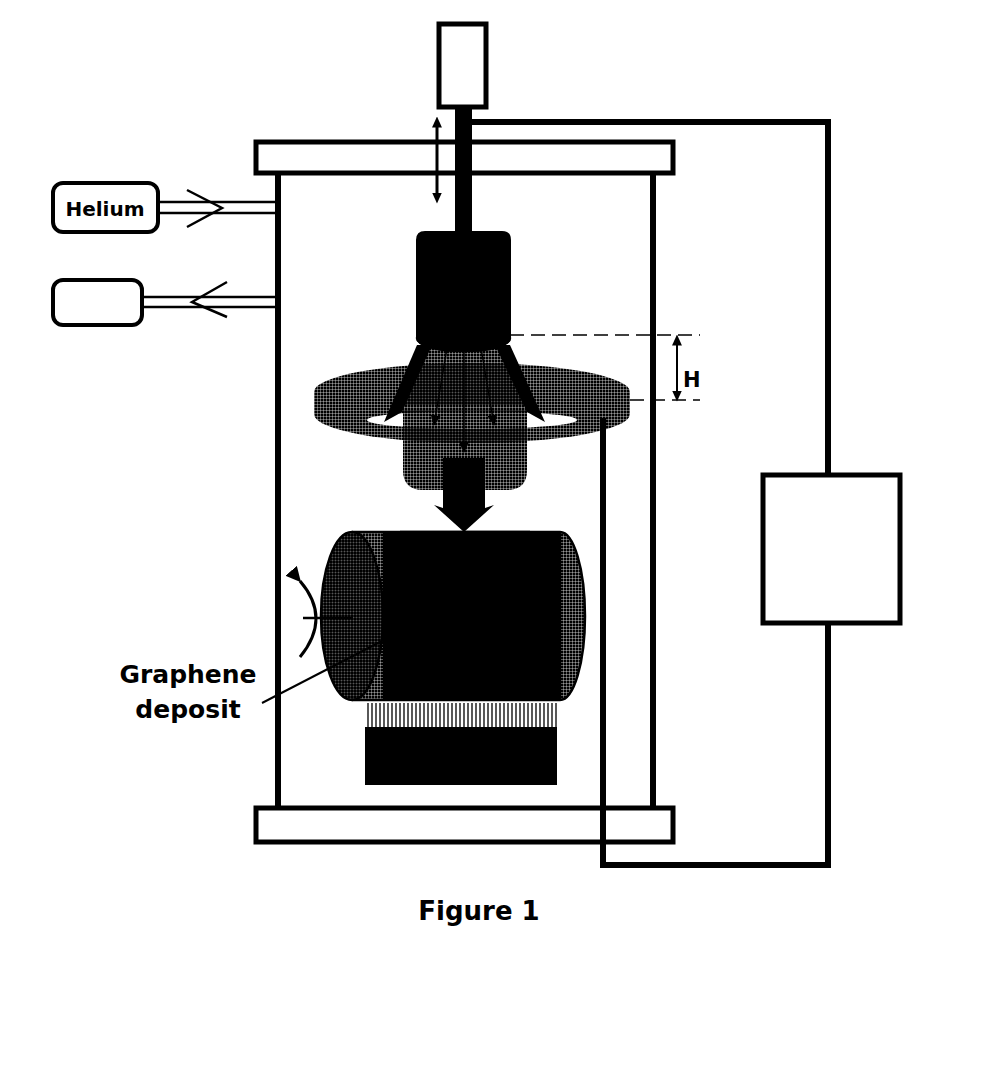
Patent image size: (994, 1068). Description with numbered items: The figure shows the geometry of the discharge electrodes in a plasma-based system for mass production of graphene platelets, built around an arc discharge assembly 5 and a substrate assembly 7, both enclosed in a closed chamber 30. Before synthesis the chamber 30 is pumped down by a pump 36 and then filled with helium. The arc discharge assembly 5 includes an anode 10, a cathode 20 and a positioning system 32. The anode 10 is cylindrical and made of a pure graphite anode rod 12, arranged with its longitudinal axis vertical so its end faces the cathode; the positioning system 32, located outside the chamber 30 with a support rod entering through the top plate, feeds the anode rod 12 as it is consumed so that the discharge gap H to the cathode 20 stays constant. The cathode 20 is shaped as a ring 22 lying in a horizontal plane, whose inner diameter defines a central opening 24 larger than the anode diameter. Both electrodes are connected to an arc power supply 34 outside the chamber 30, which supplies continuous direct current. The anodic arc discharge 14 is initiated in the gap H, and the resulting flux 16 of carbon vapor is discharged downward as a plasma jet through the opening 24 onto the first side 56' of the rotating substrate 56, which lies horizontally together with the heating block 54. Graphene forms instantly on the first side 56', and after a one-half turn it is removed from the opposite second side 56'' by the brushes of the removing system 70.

The closed chamber 30 is at (243, 137).
The positioning system 32 is at (488, 85).
The pump 36 is at (110, 327).
The anode 10 is at (514, 291).
The anode rod 12 is at (510, 295).
The anodic arc discharge 14 is at (396, 374).
The ring 22 is at (460, 401).
The cathode 20 is at (365, 420).
The central opening 24 is at (385, 425).
The flux 16 is at (403, 474).
The arc discharge assembly 5 is at (294, 409).
The substrate assembly 7 is at (294, 526).
The heating block 54 is at (434, 593).
The substrate 56 is at (558, 616).
The first side of the substrate 56' is at (490, 509).
The second side of the substrate 56'' is at (546, 739).
The removing system 70 is at (350, 758).
The arc power supply 34 is at (783, 624).